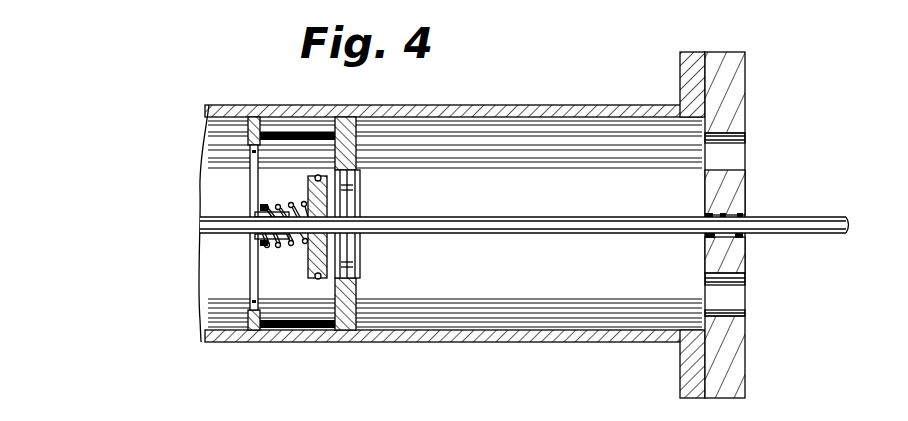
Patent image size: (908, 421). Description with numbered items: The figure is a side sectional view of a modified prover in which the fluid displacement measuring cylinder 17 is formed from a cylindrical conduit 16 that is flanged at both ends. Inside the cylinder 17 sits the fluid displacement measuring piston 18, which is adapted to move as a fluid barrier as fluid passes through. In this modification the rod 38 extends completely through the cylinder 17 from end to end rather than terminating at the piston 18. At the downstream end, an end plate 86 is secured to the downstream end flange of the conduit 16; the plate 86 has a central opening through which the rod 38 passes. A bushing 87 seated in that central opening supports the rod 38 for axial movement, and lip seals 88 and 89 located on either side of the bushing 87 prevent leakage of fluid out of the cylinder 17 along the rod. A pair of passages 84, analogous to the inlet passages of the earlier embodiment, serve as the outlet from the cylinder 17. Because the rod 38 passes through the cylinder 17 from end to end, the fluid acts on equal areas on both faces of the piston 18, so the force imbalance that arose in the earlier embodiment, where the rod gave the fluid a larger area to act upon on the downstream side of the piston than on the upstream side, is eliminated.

The cylindrical conduit 16 is at (507, 343).
The fluid displacement measuring cylinder 17 is at (528, 98).
The fluid displacement measuring piston 18 is at (372, 157).
The rod 38 is at (231, 217).
The passages 84 is at (746, 139).
The end plate 86 is at (746, 78).
The bushing 87 is at (738, 212).
The lip seal 88 is at (706, 214).
The lip seal 89 is at (740, 237).